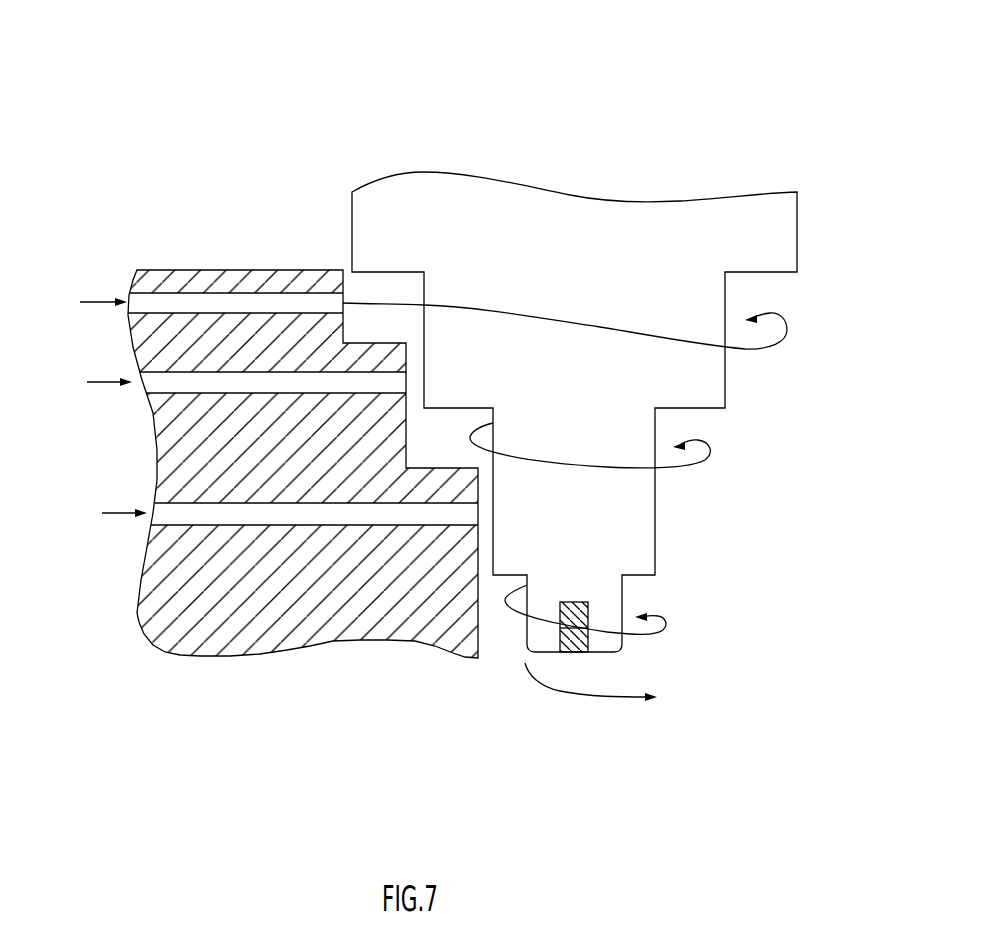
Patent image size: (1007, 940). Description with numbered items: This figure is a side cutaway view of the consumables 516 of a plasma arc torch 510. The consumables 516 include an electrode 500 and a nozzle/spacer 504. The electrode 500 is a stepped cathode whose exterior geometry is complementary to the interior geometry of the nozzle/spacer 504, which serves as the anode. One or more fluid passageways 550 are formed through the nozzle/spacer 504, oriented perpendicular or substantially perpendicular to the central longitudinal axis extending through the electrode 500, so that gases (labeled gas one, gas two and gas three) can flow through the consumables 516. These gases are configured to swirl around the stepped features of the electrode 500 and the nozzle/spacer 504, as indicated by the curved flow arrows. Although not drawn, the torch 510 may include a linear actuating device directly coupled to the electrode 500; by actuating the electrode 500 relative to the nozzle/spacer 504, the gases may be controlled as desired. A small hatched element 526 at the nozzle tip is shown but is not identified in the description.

The electrode 500 is at (775, 240).
The nozzle/spacer 504 is at (342, 622).
The torch 510 is at (638, 70).
The consumables 516 is at (226, 124).
The nozzle tip insert 526 is at (590, 608).
The fluid passageways 550 is at (192, 283).